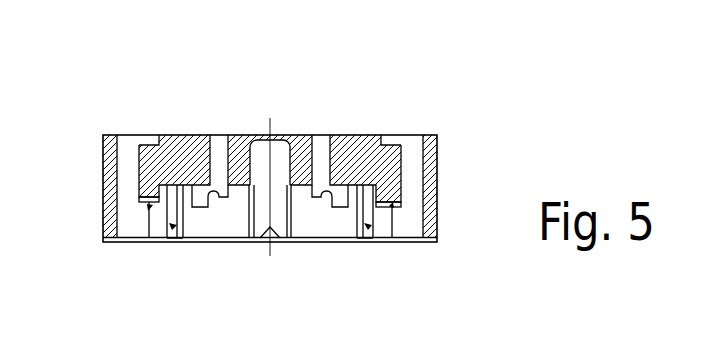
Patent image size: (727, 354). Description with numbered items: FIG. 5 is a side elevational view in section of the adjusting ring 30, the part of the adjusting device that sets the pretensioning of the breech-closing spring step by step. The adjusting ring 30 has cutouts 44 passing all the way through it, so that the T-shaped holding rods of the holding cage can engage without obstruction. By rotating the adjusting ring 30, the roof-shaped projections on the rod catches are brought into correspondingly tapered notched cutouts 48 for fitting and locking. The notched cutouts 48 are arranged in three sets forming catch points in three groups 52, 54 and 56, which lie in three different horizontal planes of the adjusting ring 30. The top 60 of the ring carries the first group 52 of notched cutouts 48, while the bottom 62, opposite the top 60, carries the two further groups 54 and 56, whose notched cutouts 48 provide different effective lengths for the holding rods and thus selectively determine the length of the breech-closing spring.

The adjusting ring 30 is at (365, 133).
The cutouts 44 is at (130, 173).
The notched cutouts 48 is at (210, 207).
The first group 52 is at (155, 140).
The second group 54 is at (327, 135).
The third group 56 is at (258, 219).
The top 60 is at (295, 135).
The bottom 62 is at (405, 218).